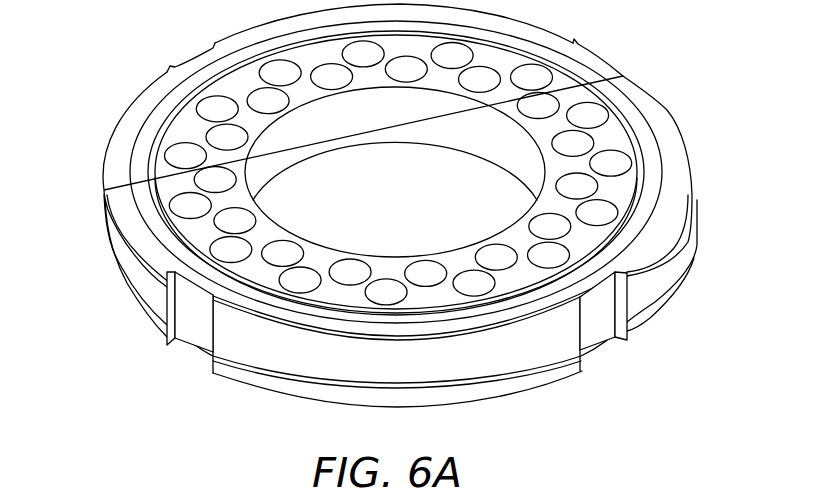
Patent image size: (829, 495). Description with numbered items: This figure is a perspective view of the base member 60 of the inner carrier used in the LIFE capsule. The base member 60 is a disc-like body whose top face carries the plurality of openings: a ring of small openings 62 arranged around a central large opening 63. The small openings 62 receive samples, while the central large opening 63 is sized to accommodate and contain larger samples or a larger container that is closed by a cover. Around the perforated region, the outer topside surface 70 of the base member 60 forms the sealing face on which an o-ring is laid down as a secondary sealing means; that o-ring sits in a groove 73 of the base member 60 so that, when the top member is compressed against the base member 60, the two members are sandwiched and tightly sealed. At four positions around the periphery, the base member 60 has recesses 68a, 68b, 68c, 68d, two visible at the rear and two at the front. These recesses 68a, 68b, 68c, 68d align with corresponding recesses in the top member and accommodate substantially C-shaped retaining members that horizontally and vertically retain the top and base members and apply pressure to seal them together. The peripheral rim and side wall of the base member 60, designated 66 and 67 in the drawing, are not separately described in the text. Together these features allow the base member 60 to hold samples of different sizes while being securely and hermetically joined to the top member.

The base member 60 is at (400, 230).
The small openings 62 is at (610, 165).
The large opening 63 is at (414, 213).
The perforated plate 66 is at (428, 295).
The lower body 67 is at (303, 353).
The recess 68a is at (202, 322).
The recess 68b is at (590, 322).
The recess 68c is at (592, 55).
The recess 68d is at (197, 57).
The outer topside surface 70 is at (103, 199).
The groove 73 is at (139, 178).